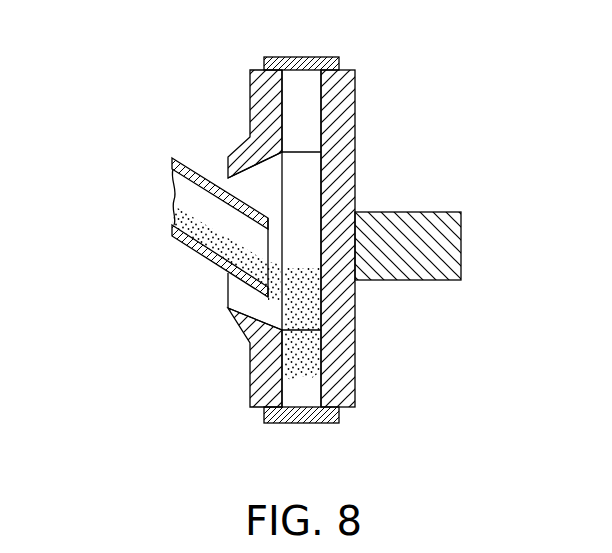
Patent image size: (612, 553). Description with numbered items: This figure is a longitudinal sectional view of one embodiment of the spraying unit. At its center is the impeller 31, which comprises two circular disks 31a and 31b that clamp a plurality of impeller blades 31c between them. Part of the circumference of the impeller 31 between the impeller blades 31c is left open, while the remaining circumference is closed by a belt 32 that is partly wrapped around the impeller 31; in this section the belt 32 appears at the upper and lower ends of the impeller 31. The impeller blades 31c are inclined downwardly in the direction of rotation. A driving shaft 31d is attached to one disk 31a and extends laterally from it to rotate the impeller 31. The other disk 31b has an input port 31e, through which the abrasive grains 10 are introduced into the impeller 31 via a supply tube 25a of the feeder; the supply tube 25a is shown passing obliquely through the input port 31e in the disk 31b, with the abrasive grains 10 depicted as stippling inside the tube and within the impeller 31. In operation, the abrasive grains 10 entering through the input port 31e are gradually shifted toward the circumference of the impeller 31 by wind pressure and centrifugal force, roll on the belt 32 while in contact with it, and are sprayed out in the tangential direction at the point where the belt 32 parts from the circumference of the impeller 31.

The abrasive grains 10 is at (172, 218).
The supply tube 25a is at (174, 158).
The impeller 31 is at (312, 233).
The circular disk 31a is at (352, 385).
The circular disk 31b is at (250, 373).
The impeller blades 31c is at (287, 90).
The driving shaft 31d is at (448, 212).
The input port 31e is at (232, 287).
The belt 32 is at (305, 57).